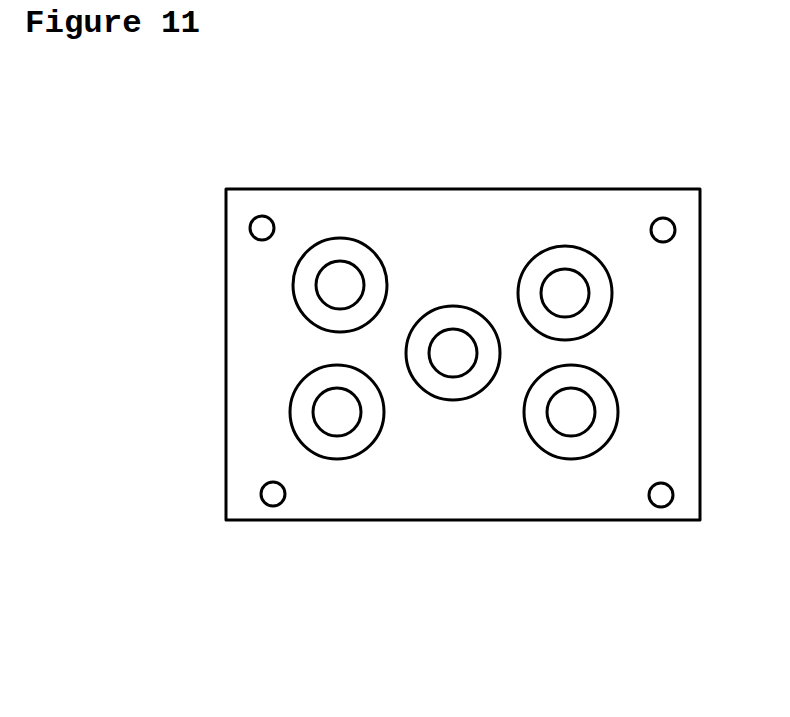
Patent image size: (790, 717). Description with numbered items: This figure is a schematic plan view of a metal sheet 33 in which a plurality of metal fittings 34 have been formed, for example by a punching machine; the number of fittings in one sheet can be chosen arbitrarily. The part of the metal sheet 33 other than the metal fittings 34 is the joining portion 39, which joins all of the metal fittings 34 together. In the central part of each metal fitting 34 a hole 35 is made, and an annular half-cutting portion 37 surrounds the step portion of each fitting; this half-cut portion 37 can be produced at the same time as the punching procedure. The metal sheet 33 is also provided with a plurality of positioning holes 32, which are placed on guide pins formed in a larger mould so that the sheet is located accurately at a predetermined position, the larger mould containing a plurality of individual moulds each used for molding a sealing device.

The positioning hole 32 is at (661, 230).
The metal sheet 33 is at (330, 552).
The metal fitting 34 is at (365, 263).
The hole 35 is at (572, 420).
The annular half-cutting portion 37 is at (317, 242).
The joining portion 39 is at (437, 482).